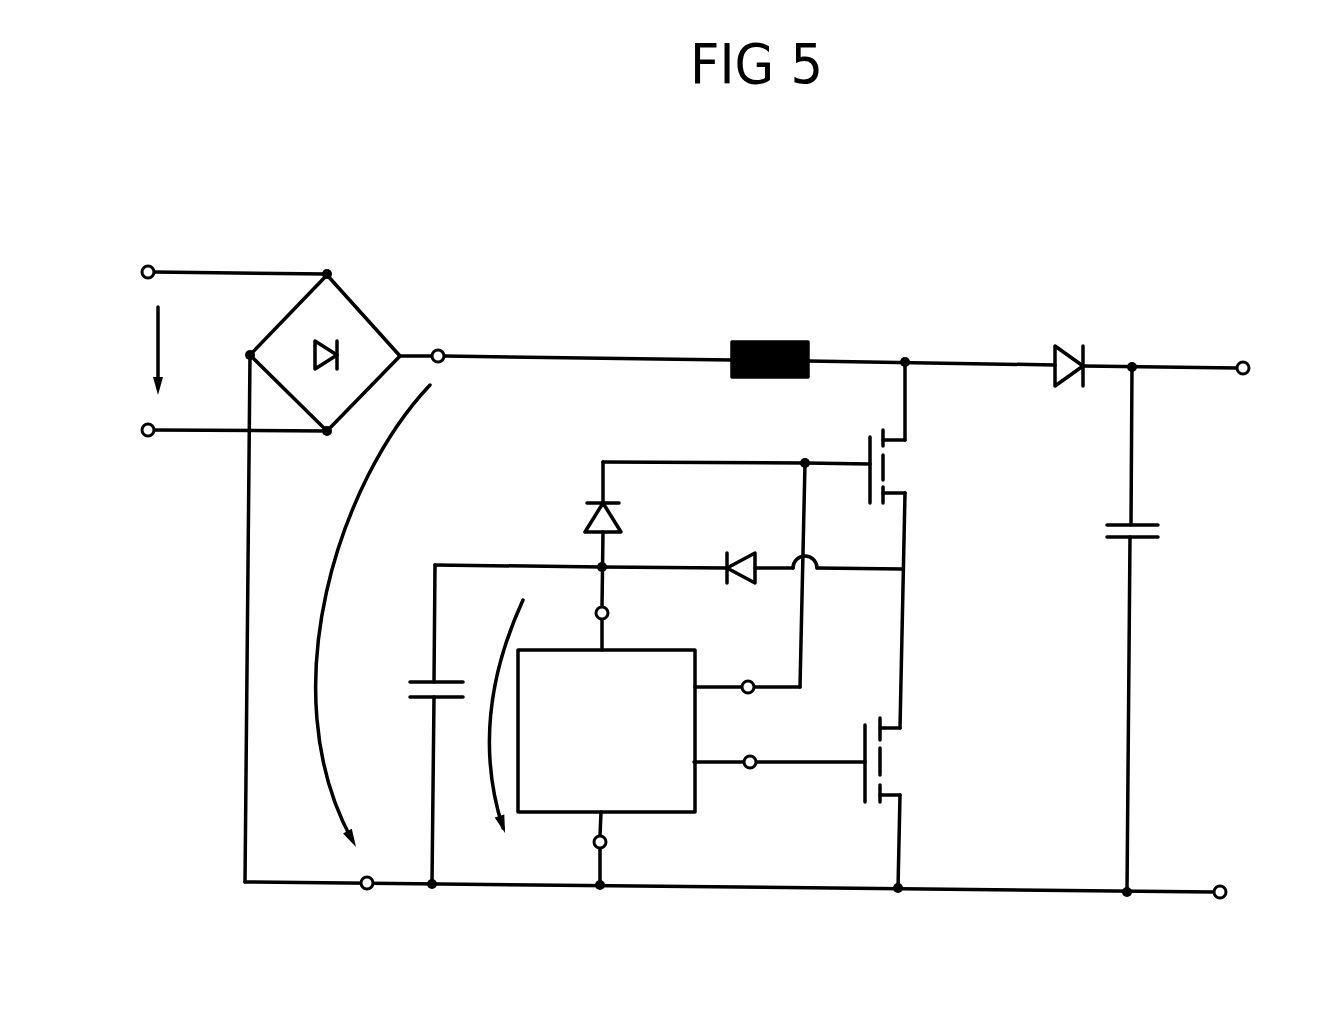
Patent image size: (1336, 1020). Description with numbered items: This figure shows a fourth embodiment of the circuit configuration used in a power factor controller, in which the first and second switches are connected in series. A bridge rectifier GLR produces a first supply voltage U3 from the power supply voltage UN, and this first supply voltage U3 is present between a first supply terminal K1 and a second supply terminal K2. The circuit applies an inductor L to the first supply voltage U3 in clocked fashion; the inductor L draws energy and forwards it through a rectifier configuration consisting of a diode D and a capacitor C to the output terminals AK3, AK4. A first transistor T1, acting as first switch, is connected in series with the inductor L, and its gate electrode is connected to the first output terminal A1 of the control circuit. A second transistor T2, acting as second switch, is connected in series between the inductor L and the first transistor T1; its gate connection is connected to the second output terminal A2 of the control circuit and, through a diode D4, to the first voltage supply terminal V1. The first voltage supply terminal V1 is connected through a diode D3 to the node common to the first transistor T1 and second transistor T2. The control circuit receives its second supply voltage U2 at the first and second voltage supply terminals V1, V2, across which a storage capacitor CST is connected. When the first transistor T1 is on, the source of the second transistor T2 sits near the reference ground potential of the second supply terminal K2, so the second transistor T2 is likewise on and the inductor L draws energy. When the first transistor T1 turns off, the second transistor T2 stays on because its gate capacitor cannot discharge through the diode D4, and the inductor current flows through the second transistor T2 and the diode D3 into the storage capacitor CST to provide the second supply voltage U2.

The bridge rectifier GLR is at (325, 328).
The power supply voltage UN is at (185, 351).
The first supply terminal K1 is at (441, 331).
The second supply terminal K2 is at (371, 905).
The inductor L is at (770, 331).
The diode D is at (1069, 338).
The output terminal AK3 is at (1282, 369).
The output terminal AK4 is at (1262, 895).
The capacitor C is at (1150, 535).
The storage capacitor CST is at (401, 689).
The second transistor T2 is at (917, 466).
The first transistor T1 is at (912, 760).
The diode D4 is at (575, 521).
The diode D3 is at (744, 543).
The first voltage supply terminal V1 is at (625, 613).
The second voltage supply terminal V2 is at (627, 845).
The second output terminal A2 is at (747, 661).
The first output terminal A1 is at (746, 783).
The first supply voltage U3 is at (378, 616).
The second supply voltage U2 is at (492, 710).